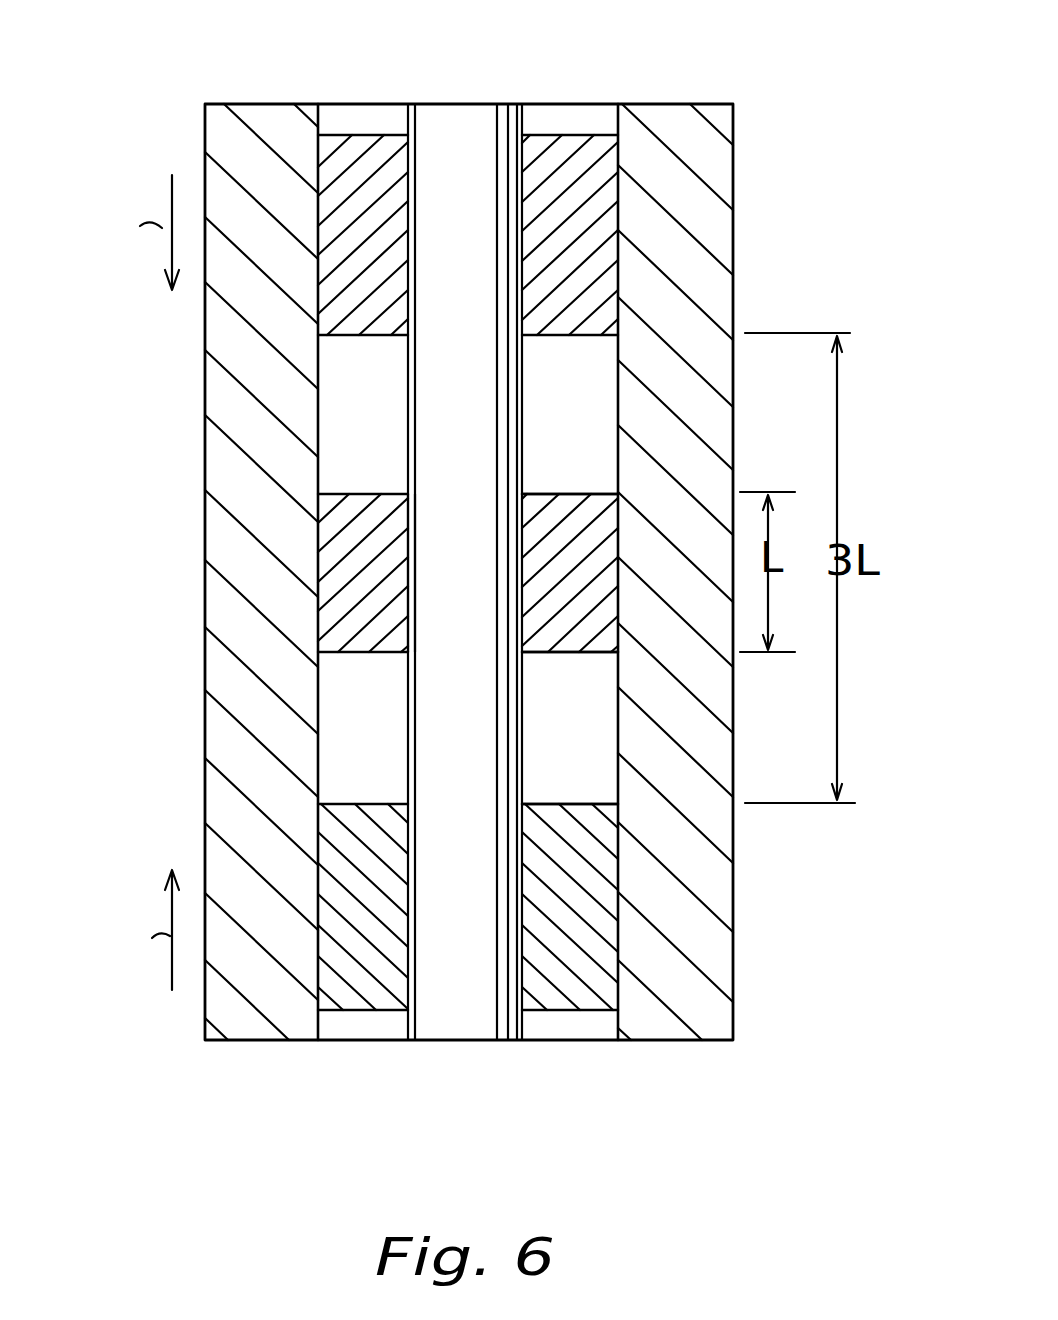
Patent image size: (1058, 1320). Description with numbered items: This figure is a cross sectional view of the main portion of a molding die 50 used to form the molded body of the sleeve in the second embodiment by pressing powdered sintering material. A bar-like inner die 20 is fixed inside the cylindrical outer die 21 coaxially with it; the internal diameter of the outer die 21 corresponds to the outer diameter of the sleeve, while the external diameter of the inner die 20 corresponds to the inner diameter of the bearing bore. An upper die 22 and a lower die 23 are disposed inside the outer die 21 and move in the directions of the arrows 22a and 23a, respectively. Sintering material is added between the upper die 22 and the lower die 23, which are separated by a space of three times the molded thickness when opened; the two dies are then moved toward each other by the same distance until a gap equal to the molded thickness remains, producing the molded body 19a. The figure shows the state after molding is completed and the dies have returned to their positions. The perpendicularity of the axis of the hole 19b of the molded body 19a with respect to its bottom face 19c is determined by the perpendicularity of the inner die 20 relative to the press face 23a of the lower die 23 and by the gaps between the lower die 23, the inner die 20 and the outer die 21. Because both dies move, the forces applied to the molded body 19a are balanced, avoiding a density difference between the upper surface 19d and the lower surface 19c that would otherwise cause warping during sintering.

The molding die 50 is at (768, 162).
The outer die 21 is at (665, 125).
The inner die 20 is at (462, 130).
The upper die 22 is at (372, 135).
The arrow 22a is at (120, 232).
The molded body 19a is at (343, 540).
The hole 19b is at (410, 587).
The bottom face 19c is at (573, 652).
The upper surface 19d is at (567, 490).
The lower die 23 is at (575, 965).
The arrow / press face 23a is at (560, 803).